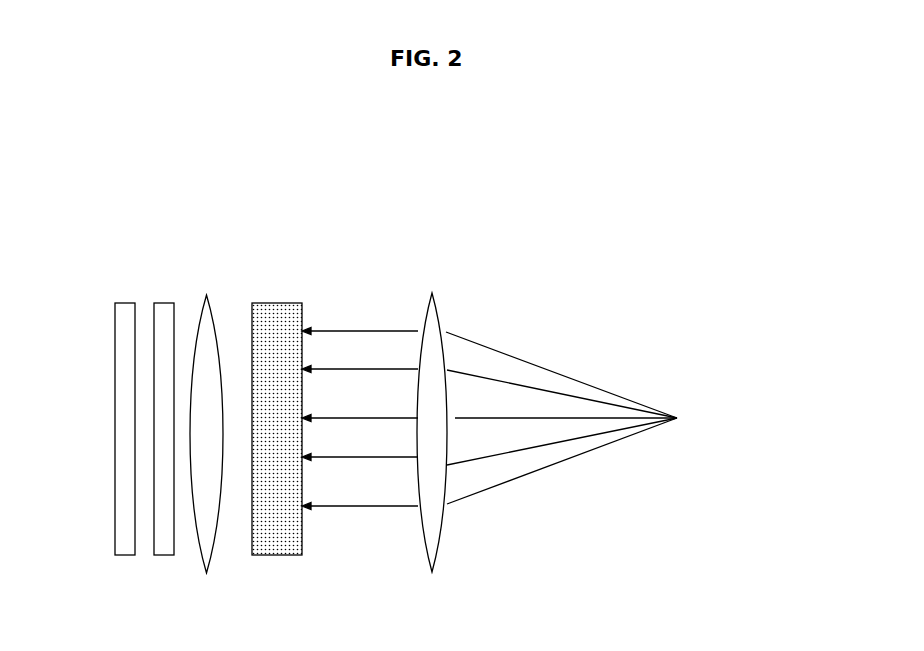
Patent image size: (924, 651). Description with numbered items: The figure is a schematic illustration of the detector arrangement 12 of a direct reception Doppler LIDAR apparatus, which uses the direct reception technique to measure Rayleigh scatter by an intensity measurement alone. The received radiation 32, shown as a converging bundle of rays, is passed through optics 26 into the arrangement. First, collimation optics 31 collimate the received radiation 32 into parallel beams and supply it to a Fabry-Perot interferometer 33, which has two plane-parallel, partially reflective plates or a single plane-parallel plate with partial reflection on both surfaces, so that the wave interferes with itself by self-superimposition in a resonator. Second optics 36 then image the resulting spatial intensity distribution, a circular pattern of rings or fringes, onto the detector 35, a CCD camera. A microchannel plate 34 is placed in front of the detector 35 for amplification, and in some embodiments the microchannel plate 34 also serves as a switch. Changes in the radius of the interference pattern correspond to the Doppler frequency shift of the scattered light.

The detector arrangement 12 is at (680, 356).
The optics 26 is at (528, 206).
The collimation optics 31 is at (447, 312).
The received radiation 32 is at (360, 331).
The Fabry-Perot interferometer 33 is at (282, 302).
The microchannel plate 34 is at (163, 302).
The detector 35 is at (115, 302).
The second optics 36 is at (207, 294).